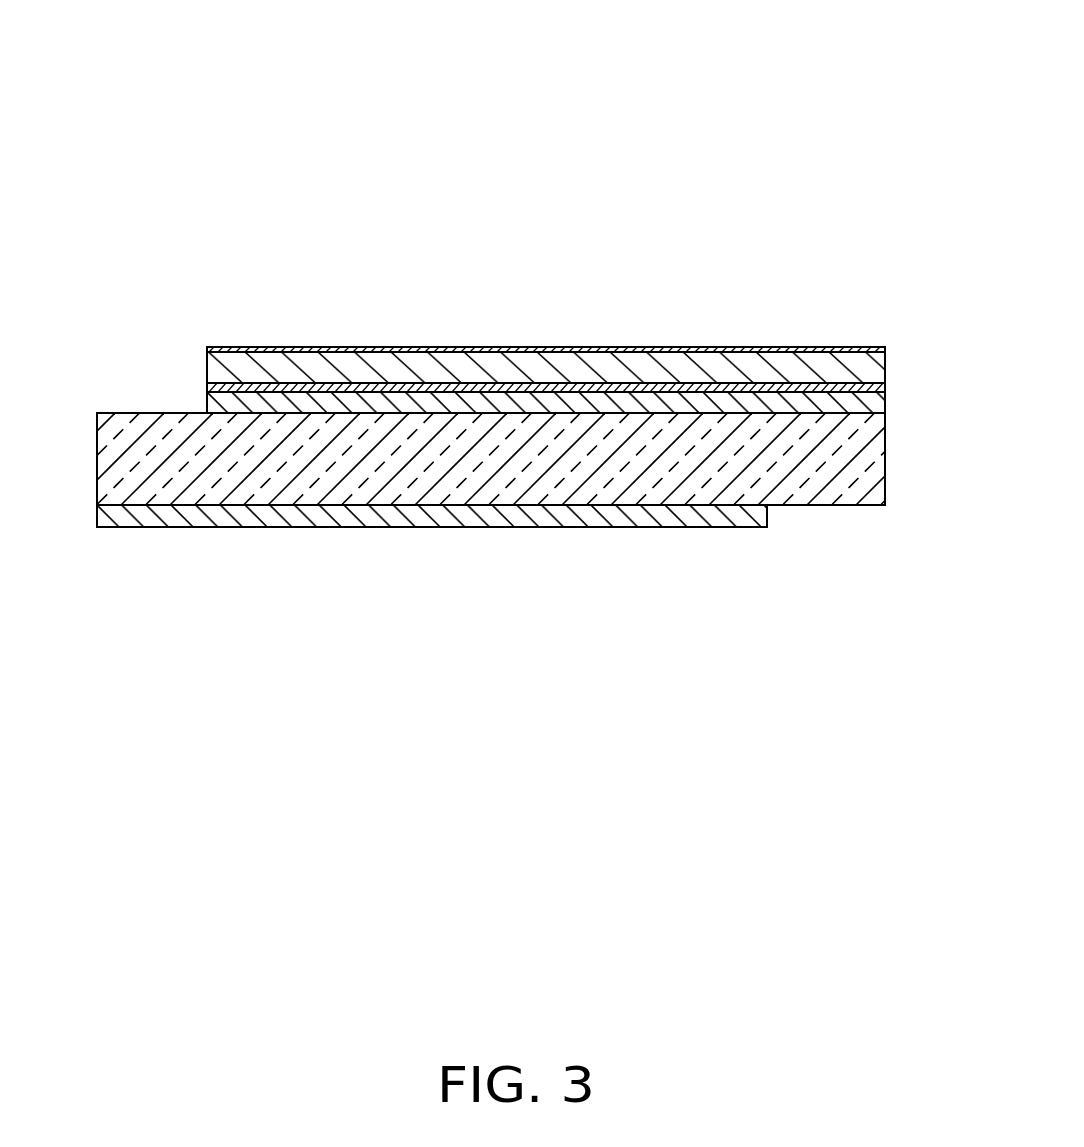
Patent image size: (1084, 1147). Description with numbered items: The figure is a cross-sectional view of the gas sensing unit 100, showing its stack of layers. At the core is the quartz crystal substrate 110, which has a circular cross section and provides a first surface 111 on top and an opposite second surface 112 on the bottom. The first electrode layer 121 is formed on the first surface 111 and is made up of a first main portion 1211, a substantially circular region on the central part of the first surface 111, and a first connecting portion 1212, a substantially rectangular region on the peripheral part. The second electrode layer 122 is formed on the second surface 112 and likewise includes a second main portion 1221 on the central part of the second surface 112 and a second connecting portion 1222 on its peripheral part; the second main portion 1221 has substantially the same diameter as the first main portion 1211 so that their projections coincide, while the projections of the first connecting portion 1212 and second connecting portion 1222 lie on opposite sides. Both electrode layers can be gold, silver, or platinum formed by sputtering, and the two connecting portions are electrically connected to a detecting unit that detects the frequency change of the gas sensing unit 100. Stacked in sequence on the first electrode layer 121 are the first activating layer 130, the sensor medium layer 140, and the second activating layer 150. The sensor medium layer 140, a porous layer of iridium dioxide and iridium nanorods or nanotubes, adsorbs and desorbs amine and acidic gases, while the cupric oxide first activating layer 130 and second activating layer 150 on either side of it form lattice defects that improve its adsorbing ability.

The gas sensing unit 100 is at (510, 62).
The quartz crystal substrate 110 is at (860, 457).
The first surface 111 is at (148, 402).
The second surface 112 is at (818, 517).
The first electrode layer 121 is at (546, 323).
The first main portion 1211 is at (488, 400).
The first connecting portion 1212 is at (715, 350).
The second electrode layer 122 is at (432, 584).
The second main portion 1221 is at (598, 563).
The second connecting portion 1222 is at (165, 512).
The first activating layer 130 is at (877, 387).
The sensor medium layer 140 is at (870, 372).
The second activating layer 150 is at (877, 348).